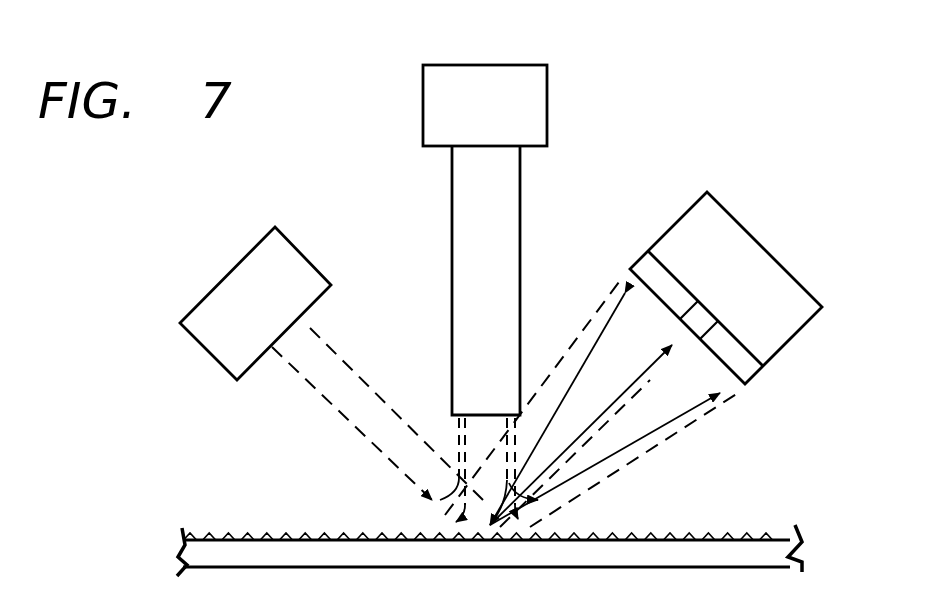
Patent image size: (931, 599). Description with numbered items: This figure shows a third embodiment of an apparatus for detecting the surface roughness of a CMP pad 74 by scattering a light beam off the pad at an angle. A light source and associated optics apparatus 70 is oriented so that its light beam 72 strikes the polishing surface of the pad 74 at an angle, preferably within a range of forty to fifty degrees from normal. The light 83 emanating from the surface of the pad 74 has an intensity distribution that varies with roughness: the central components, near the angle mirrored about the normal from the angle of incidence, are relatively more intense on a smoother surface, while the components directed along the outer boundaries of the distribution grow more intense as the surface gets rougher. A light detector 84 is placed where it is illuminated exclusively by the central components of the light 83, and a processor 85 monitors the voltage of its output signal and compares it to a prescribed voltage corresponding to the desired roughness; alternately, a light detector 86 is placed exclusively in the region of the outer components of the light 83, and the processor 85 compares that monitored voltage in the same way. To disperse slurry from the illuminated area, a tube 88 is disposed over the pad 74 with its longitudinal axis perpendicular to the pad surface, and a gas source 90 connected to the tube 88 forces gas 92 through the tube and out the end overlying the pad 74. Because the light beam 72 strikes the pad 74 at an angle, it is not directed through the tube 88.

The light source and associated optics apparatus 70 is at (268, 231).
The light beam 72 is at (355, 385).
The pad 74 is at (782, 540).
The light emanating from the surface of the pad 83 is at (620, 478).
The light detector 84 is at (705, 312).
The processor 85 is at (742, 225).
The light detector 86 is at (640, 262).
The tube 88 is at (520, 192).
The gas source 90 is at (437, 65).
The gas 92 is at (436, 503).